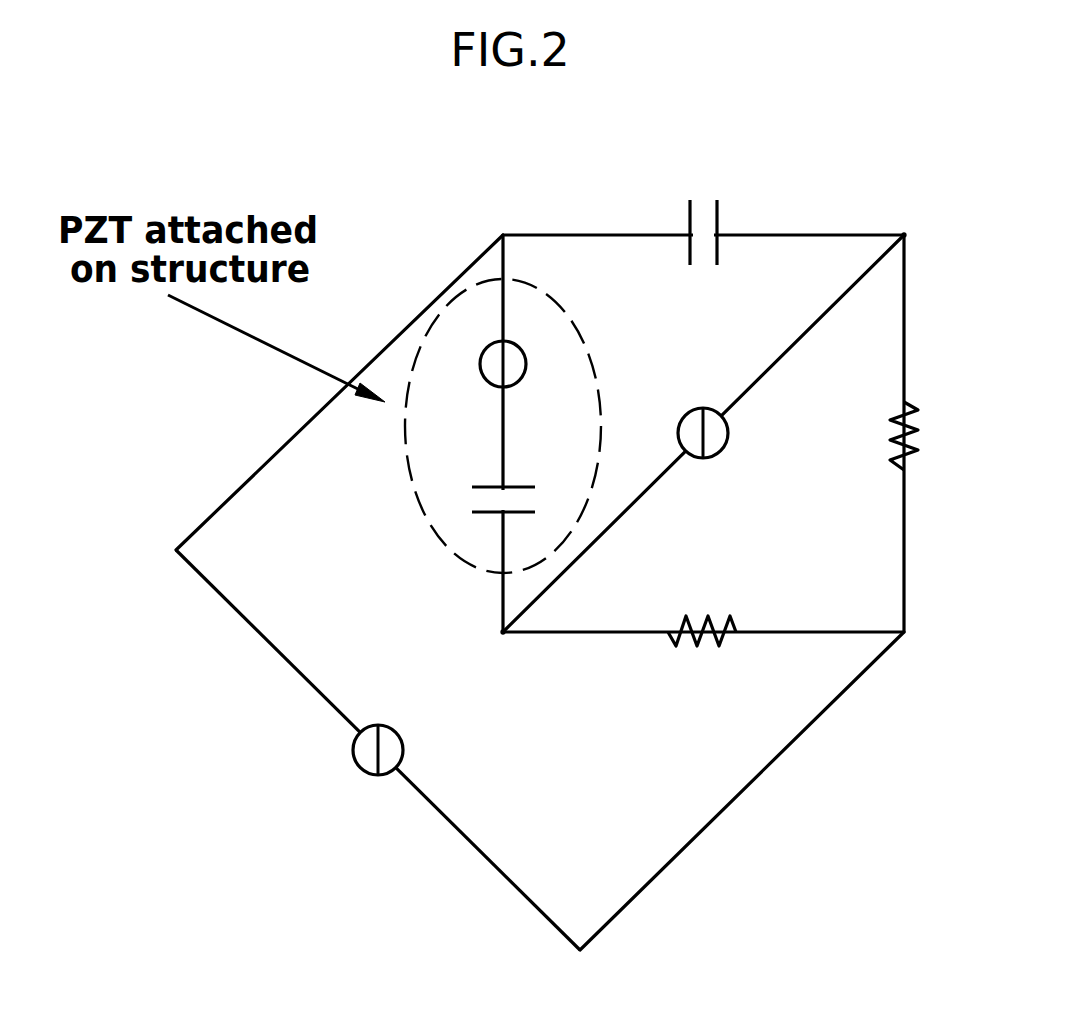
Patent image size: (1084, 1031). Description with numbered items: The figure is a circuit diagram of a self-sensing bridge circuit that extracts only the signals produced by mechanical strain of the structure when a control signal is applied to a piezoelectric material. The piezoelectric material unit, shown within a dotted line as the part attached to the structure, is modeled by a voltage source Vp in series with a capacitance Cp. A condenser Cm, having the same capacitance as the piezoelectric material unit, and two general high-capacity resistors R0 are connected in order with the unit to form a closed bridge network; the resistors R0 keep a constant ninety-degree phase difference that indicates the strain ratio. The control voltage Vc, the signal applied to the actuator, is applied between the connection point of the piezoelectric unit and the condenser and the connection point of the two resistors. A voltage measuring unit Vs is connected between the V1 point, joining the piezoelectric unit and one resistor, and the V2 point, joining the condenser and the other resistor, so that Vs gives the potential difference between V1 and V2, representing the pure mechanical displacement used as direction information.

The condenser Cm is at (702, 212).
The V2 point V2 is at (928, 222).
The general resistor of a high capacity R0 is at (793, 524).
The voltage measuring unit Vs is at (725, 433).
The piezoelectric voltage Vp is at (479, 364).
The piezoelectric capacitance Cp is at (481, 499).
The V1 point V1 is at (498, 653).
The control signal voltage Vc is at (378, 750).